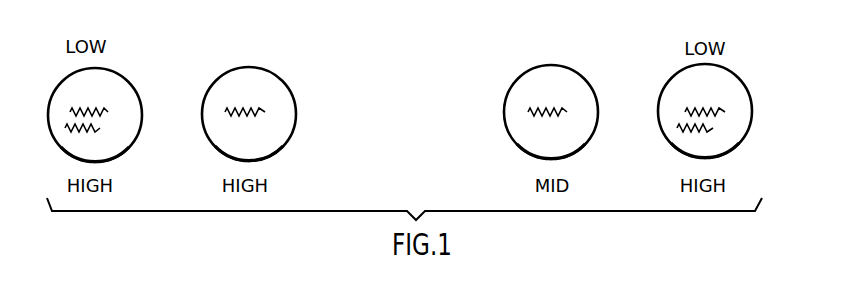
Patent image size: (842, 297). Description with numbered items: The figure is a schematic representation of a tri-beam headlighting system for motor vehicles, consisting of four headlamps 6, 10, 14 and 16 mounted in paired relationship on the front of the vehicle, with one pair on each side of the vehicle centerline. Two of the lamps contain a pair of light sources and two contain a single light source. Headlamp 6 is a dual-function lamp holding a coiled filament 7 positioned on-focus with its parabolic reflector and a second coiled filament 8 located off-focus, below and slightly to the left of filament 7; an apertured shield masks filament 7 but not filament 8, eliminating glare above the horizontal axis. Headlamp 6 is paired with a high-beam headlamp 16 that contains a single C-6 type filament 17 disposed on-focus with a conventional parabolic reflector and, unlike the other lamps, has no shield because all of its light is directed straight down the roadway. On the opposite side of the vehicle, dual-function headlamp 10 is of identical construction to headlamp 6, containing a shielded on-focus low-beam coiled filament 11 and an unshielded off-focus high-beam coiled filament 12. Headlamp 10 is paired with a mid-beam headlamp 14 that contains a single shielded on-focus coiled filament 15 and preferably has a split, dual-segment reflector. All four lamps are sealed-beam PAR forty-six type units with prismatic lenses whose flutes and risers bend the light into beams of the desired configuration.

The headlamp 6 is at (131, 68).
The coiled filament 7 is at (72, 112).
The coiled filament 8 is at (66, 129).
The high-beam headlamp 16 is at (291, 93).
The filament 17 is at (265, 112).
The mid-beam headlamp 14 is at (509, 91).
The coiled filament 15 is at (530, 114).
The headlamp 10 is at (664, 88).
The coiled filament 11 is at (724, 110).
The coiled filament 12 is at (680, 127).